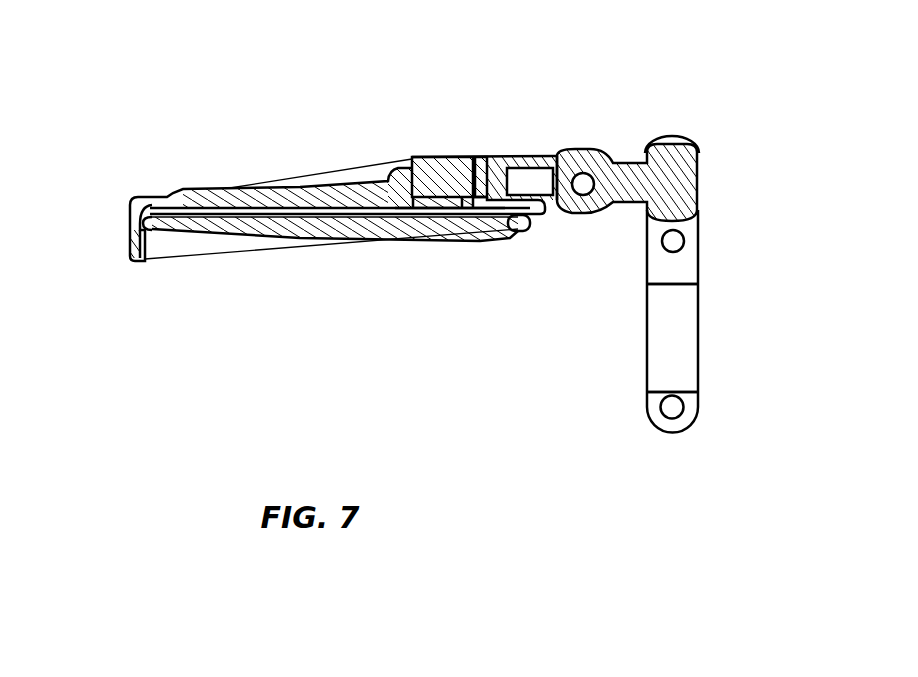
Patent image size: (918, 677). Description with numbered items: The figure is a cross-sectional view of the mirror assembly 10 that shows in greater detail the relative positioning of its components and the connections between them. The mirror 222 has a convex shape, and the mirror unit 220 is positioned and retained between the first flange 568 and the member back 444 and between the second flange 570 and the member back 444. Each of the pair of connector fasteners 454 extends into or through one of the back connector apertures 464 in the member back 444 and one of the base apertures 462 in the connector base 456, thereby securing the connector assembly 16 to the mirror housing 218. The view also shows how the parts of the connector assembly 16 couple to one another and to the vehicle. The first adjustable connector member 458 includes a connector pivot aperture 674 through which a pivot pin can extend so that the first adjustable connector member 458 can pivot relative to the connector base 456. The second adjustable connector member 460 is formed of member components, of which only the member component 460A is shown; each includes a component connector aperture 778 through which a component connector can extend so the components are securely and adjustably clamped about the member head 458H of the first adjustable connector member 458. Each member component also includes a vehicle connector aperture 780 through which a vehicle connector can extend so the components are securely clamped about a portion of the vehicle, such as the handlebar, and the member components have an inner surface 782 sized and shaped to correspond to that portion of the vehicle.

The mirror assembly 10 is at (180, 133).
The connector assembly 16 is at (687, 108).
The mirror housing 218 is at (130, 188).
The mirror unit 220 is at (312, 248).
The mirror 222 is at (371, 233).
The member back 444 is at (333, 193).
The connector fasteners 454 is at (475, 160).
The connector base 456 is at (438, 173).
The first adjustable connector member 458 is at (630, 168).
The member head 458H is at (693, 160).
The second adjustable connector member 460 is at (624, 356).
The member component 460A is at (688, 272).
The base apertures 462 is at (494, 158).
The back connector apertures 464 is at (420, 195).
The first flange 568 is at (512, 231).
The second flange 570 is at (158, 228).
The connector pivot aperture 674 is at (587, 195).
The component connector aperture 778 is at (685, 238).
The vehicle connector aperture 780 is at (678, 414).
The inner surface 782 is at (675, 323).